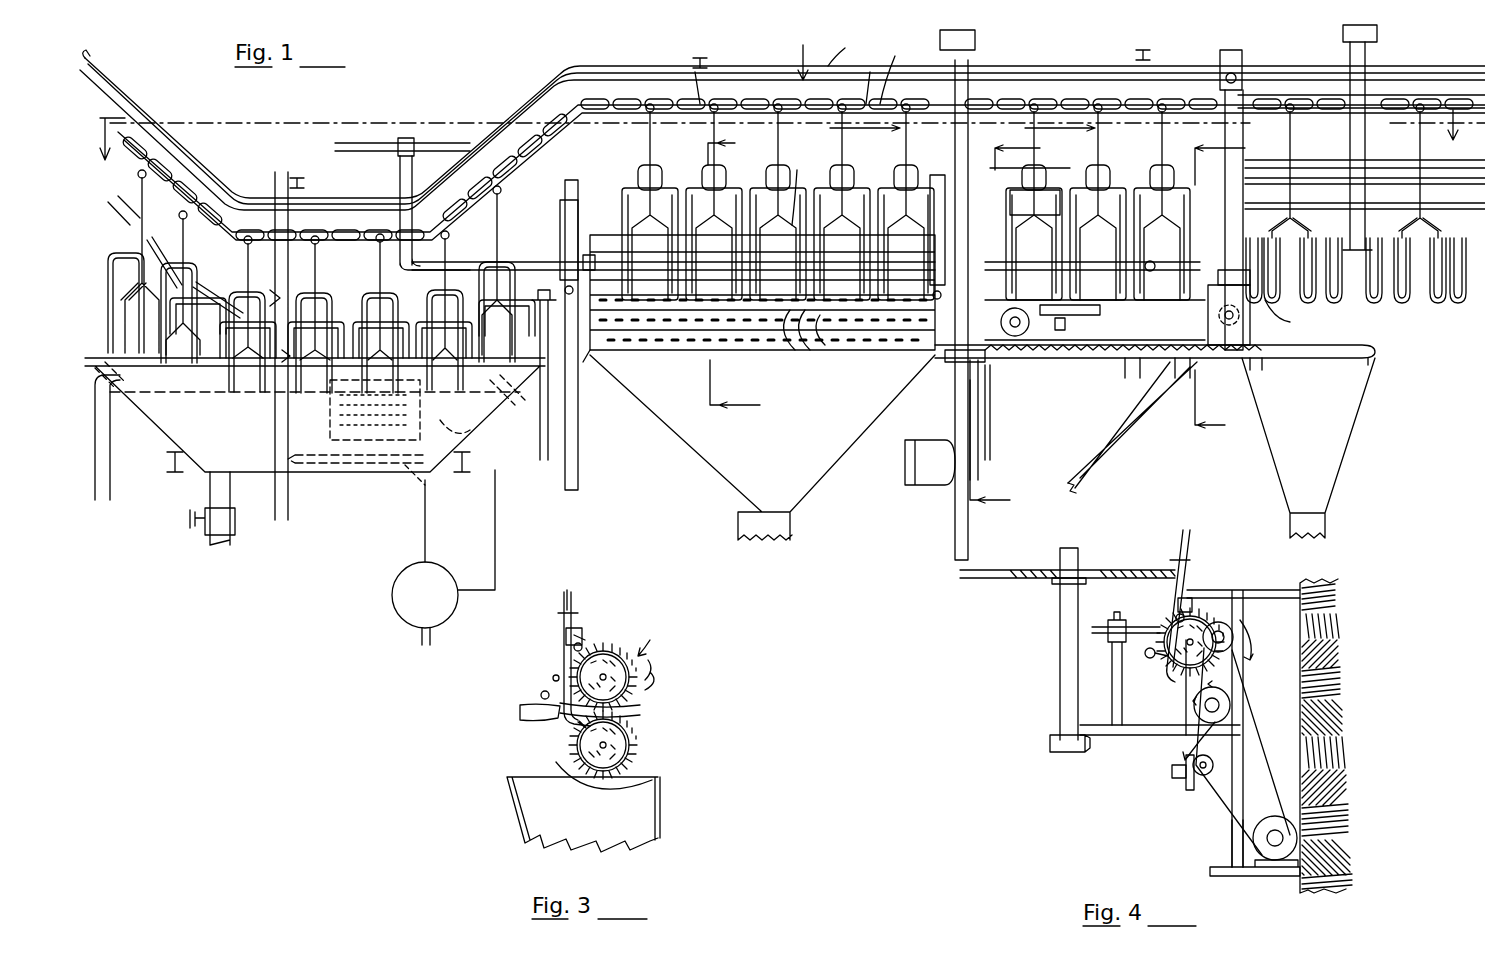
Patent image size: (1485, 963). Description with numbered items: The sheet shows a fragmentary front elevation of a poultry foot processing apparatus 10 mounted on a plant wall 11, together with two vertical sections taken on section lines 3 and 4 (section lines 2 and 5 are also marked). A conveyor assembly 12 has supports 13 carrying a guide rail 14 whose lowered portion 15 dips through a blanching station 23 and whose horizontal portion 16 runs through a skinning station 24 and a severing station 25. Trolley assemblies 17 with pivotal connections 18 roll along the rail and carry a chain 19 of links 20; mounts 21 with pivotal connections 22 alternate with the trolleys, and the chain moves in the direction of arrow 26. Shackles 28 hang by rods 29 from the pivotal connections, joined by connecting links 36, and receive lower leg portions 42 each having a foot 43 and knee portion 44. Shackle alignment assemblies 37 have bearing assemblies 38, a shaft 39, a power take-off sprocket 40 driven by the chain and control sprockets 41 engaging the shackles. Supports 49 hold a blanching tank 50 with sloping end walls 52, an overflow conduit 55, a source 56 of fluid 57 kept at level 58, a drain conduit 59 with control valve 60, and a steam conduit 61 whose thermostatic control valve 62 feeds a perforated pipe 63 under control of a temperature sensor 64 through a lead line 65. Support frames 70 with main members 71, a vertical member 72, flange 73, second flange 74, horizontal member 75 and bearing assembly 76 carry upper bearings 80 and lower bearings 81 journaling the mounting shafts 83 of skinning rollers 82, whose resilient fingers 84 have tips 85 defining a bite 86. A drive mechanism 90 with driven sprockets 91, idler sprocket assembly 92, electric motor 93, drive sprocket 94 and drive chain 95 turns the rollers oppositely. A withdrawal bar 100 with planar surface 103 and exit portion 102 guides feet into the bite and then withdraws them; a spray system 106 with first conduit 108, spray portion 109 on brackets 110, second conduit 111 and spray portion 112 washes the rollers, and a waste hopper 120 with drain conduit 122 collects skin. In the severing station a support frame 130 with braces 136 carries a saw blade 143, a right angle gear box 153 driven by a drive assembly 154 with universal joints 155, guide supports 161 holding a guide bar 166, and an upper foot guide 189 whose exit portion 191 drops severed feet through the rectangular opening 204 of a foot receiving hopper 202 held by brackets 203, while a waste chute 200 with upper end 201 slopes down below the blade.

In FIG. 1, the section line 2 is at (777, 151).
In FIG. 1, the section line 3 is at (737, 274).
In FIG. 1, the section line 4 is at (1017, 324).
In FIG. 1, the section line 5 is at (1230, 287).
In FIG. 1, the apparatus 10 is at (866, 528).
In FIG. 1, the wall 11 is at (408, 94).
In FIG. 4, the wall 11 is at (1300, 640).
In FIG. 1, the conveyor assembly 12 is at (524, 90).
In FIG. 1, the supports 13 is at (1143, 50).
In FIG. 1, the guide rail 14 is at (742, 66).
In FIG. 1, the lowered portion 15 is at (360, 198).
In FIG. 1, the horizontal portion 16 is at (843, 46).
In FIG. 1, the trolley assemblies 17 is at (782, 74).
In FIG. 1, the pivotal connection 18 is at (712, 118).
In FIG. 1, the chain 19 is at (803, 53).
In FIG. 1, the links 20 is at (894, 69).
In FIG. 1, the mount 21 is at (1036, 104).
In FIG. 1, the pivotal connection 22 is at (1178, 116).
In FIG. 1, the blanching station 23 is at (343, 547).
In FIG. 1, the skinning station 24 is at (685, 482).
In FIG. 1, the severing station 25 is at (1077, 402).
In FIG. 1, the arrow 26 is at (868, 128).
In FIG. 1, the shackles 28 is at (310, 295).
In FIG. 3, the shackles 28 is at (560, 610).
In FIG. 4, the shackles 28 is at (1180, 555).
In FIG. 1, the rods 29 is at (1118, 150).
In FIG. 1, the connecting links 36 is at (1065, 198).
In FIG. 1, the shackle alignment assemblies 37 is at (1370, 60).
In FIG. 1, the bearing assemblies 38 is at (1350, 42).
In FIG. 1, the shaft 39 is at (1375, 62).
In FIG. 4, the shaft 39 is at (1060, 650).
In FIG. 1, the power take-off sprocket 40 is at (1315, 160).
In FIG. 1, the control sprockets 41 is at (1380, 190).
In FIG. 4, the control sprockets 41 is at (1020, 570).
In FIG. 3, the lower leg portions 42 is at (550, 718).
In FIG. 3, the foot 43 is at (640, 712).
In FIG. 3, the knee portion 44 is at (520, 710).
In FIG. 1, the supports 49 is at (464, 472).
In FIG. 1, the blanching tank 50 is at (150, 440).
In FIG. 1, the end walls 52 is at (520, 412).
In FIG. 1, the overflow conduit 55 is at (112, 490).
In FIG. 1, the source 56 is at (545, 400).
In FIG. 1, the fluid 57 is at (365, 458).
In FIG. 1, the level 58 is at (385, 392).
In FIG. 1, the drain conduit 59 is at (232, 548).
In FIG. 1, the control valve 60 is at (238, 528).
In FIG. 1, the steam conduit 61 is at (420, 640).
In FIG. 1, the thermostatic control valve 62 is at (440, 608).
In FIG. 1, the perforated discharge nozzle or pipe 63 is at (400, 485).
In FIG. 1, the temperature sensor 64 is at (448, 418).
In FIG. 1, the lead line 65 is at (495, 533).
In FIG. 1, the support frames 70 is at (922, 391).
In FIG. 4, the support frames 70 is at (1248, 580).
In FIG. 4, the main members 71 is at (1260, 892).
In FIG. 4, the vertical member 72 is at (1232, 830).
In FIG. 4, the flange 73 is at (1240, 720).
In FIG. 4, the second flange 74 is at (1175, 768).
In FIG. 4, the horizontal member 75 is at (1128, 735).
In FIG. 1, the bearing assembly 76 is at (965, 358).
In FIG. 4, the bearing assembly 76 is at (1050, 742).
In FIG. 1, the upper pair of bearings 80 is at (936, 195).
In FIG. 1, the lower pair of bearings 81 is at (588, 355).
In FIG. 1, the skinning rollers 82 is at (635, 340).
In FIG. 3, the skinning rollers 82 is at (636, 742).
In FIG. 4, the skinning rollers 82 is at (1205, 615).
In FIG. 1, the mounting shafts 83 is at (940, 345).
In FIG. 1, the resilient fingers 84 is at (798, 349).
In FIG. 3, the resilient fingers 84 is at (669, 678).
In FIG. 3, the tips 85 is at (650, 636).
In FIG. 3, the bite 86 is at (578, 722).
In FIG. 4, the drive mechanism 90 is at (1156, 825).
In FIG. 4, the driven sprocket 91 is at (1200, 690).
In FIG. 1, the idler sprocket assembly 92 is at (975, 390).
In FIG. 4, the idler sprocket assembly 92 is at (1220, 780).
In FIG. 1, the electric motor 93 is at (910, 458).
In FIG. 4, the electric motor 93 is at (1253, 840).
In FIG. 4, the drive sprocket 94 is at (1272, 830).
In FIG. 1, the drive chain 95 is at (978, 428).
In FIG. 4, the drive chain 95 is at (1250, 695).
In FIG. 1, the withdrawal bar 100 is at (810, 186).
In FIG. 3, the withdrawal bar 100 is at (573, 628).
In FIG. 4, the withdrawal bar 100 is at (1185, 590).
In FIG. 4, the exit portion 102 is at (1176, 615).
In FIG. 3, the planar surface 103 is at (566, 636).
In FIG. 4, the planar surface 103 is at (1178, 595).
In FIG. 1, the spray system 106 is at (410, 136).
In FIG. 1, the first conduit 108 is at (455, 138).
In FIG. 3, the spray portion 109 is at (570, 652).
In FIG. 3, the brackets 110 is at (582, 640).
In FIG. 1, the second conduit 111 is at (455, 262).
In FIG. 3, the spray portion 112 is at (542, 694).
In FIG. 4, the spray portion 112 is at (1145, 658).
In FIG. 1, the waste hopper 120 is at (728, 446).
In FIG. 3, the waste hopper 120 is at (578, 826).
In FIG. 1, the drain conduit 122 is at (790, 535).
In FIG. 1, the support frame 130 is at (1388, 356).
In FIG. 1, the braces 136 is at (1180, 368).
In FIG. 1, the saw blade 143 is at (1175, 318).
In FIG. 1, the right angle gear box 153 is at (1245, 345).
In FIG. 1, the drive assembly 154 is at (1235, 132).
In FIG. 1, the universal joints 155 is at (1242, 78).
In FIG. 4, the guide supports 161 is at (1112, 668).
In FIG. 3, the guide bar 166 is at (553, 678).
In FIG. 1, the upper foot guide 189 is at (1095, 282).
In FIG. 1, the exit portion 191 is at (1290, 322).
In FIG. 1, the waste chute 200 is at (1112, 475).
In FIG. 1, the upper end 201 is at (1195, 368).
In FIG. 1, the foot receiving hopper 202 is at (1282, 443).
In FIG. 1, the brackets 203 is at (1250, 365).
In FIG. 1, the rectangular opening 204 is at (1378, 360).